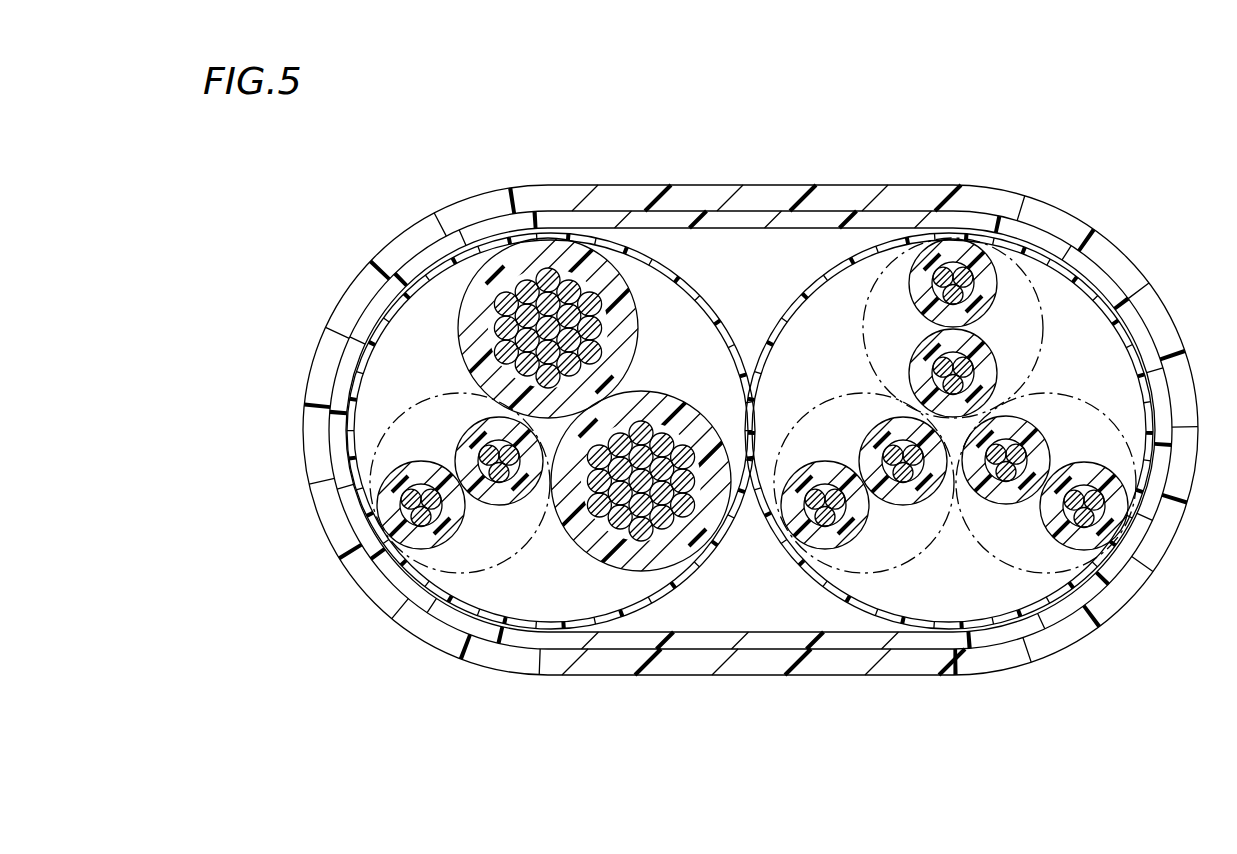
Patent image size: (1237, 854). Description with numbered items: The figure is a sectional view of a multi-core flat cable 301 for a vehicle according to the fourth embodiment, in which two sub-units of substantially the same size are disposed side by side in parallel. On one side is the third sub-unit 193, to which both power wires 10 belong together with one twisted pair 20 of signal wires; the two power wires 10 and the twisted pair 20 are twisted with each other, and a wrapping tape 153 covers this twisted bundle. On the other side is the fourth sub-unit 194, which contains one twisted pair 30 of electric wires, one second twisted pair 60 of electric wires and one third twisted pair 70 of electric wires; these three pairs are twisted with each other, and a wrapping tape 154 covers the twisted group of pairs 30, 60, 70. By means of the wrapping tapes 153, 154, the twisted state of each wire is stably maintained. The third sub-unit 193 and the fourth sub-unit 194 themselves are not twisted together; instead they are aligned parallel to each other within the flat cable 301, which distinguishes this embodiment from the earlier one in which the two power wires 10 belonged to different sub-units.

The multi-core flat cable 301 is at (987, 149).
The power wire 10 is at (460, 293).
The twisted pair of signal wires 20 is at (483, 575).
The twisted pair of electric wires 30 is at (887, 575).
The second twisted pair of electric wires 60 is at (1008, 575).
The third twisted pair of electric wires 70 is at (1036, 292).
The wrapping tape 153 is at (590, 236).
The wrapping tape 154 is at (926, 237).
The third sub-unit 193 is at (650, 246).
The fourth sub-unit 194 is at (836, 249).